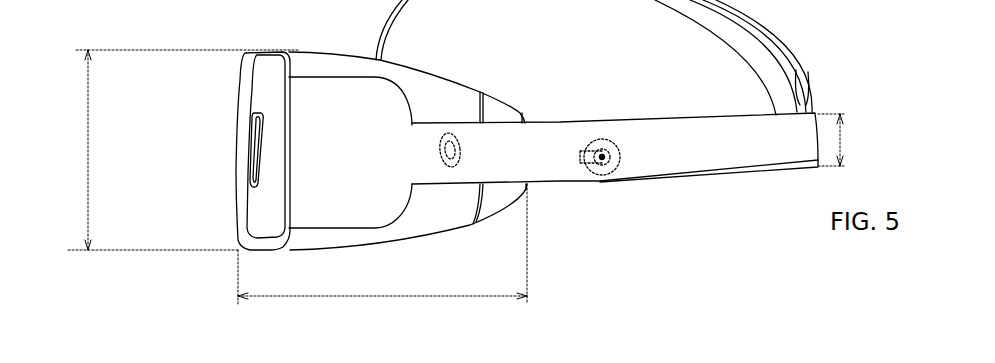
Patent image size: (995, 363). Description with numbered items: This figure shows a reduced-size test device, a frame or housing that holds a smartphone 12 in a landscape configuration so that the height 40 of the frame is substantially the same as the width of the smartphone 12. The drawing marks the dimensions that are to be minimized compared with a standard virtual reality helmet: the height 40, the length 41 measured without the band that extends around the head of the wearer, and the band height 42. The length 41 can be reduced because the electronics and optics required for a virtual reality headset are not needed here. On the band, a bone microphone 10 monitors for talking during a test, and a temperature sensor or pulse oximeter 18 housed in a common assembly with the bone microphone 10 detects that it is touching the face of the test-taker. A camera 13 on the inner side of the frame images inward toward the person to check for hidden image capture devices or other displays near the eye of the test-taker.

The bone microphone 10 is at (612, 164).
The smartphone 12 is at (268, 70).
The camera 13 is at (453, 165).
The pulse oximeter 18 is at (605, 165).
The height 40 is at (88, 148).
The length 41 is at (398, 298).
The band height 42 is at (849, 140).